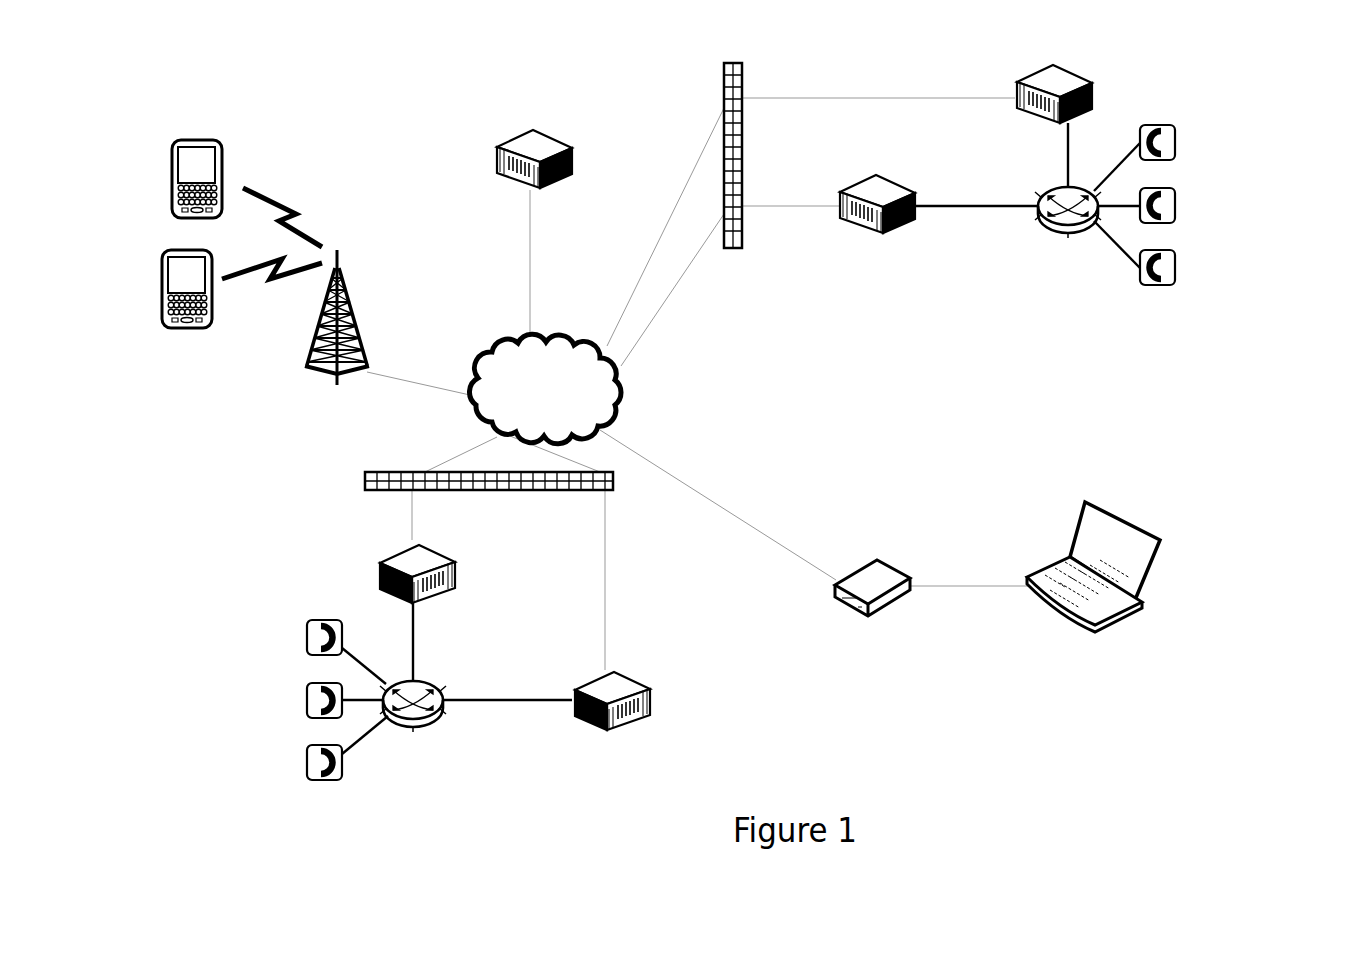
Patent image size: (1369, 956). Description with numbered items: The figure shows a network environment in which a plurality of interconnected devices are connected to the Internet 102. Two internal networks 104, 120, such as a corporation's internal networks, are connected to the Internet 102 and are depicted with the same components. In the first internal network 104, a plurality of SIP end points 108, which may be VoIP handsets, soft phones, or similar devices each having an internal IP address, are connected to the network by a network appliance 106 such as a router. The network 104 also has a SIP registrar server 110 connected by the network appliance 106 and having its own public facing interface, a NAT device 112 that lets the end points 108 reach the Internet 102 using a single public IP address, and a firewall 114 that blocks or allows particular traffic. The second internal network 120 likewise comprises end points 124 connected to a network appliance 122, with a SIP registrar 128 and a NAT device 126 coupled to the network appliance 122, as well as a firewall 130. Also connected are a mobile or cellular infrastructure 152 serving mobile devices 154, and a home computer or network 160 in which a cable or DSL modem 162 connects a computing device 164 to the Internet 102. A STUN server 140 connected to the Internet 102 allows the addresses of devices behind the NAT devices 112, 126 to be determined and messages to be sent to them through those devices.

The Internet 102 is at (546, 389).
The internal network 104 is at (1268, 300).
The network appliance 106 is at (1050, 238).
The SIP end points 108 is at (1283, 130).
The SIP registrar server 110 is at (1085, 72).
The NAT device 112 is at (870, 172).
The firewall 114 is at (742, 62).
The internal network 120 is at (713, 782).
The network appliance 122 is at (432, 732).
The end points 124 is at (185, 620).
The NAT device 126 is at (457, 570).
The SIP registrar 128 is at (625, 738).
The firewall 130 is at (610, 492).
The STUN server 140 is at (575, 137).
The mobile or cellular infrastructure 152 is at (345, 312).
The mobile devices 154 is at (160, 262).
The home computer or network 160 is at (1200, 660).
The modem 162 is at (905, 574).
The computing device 164 is at (1125, 515).